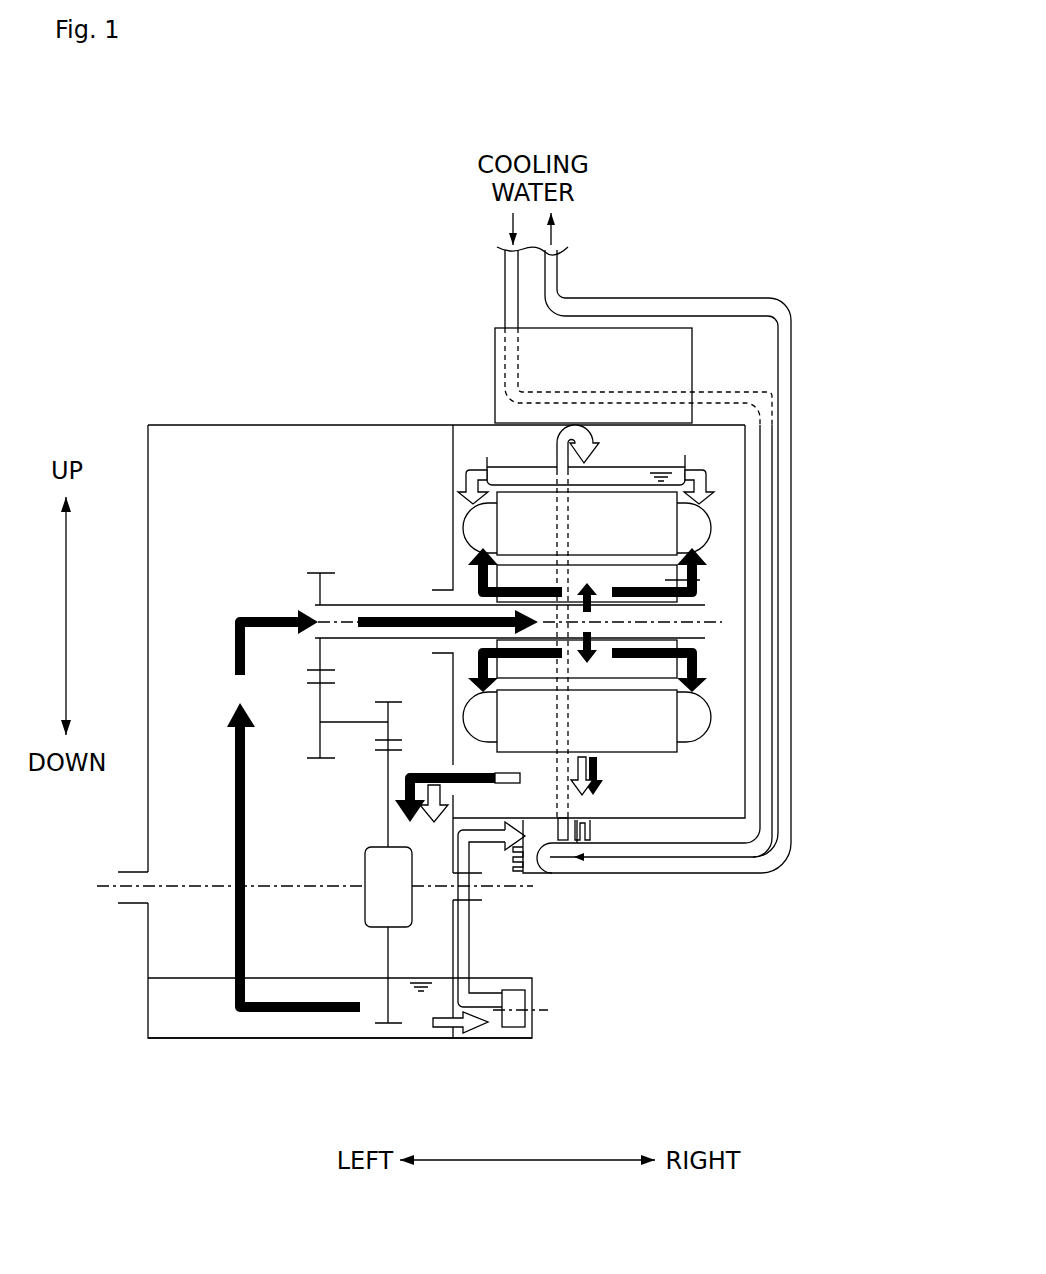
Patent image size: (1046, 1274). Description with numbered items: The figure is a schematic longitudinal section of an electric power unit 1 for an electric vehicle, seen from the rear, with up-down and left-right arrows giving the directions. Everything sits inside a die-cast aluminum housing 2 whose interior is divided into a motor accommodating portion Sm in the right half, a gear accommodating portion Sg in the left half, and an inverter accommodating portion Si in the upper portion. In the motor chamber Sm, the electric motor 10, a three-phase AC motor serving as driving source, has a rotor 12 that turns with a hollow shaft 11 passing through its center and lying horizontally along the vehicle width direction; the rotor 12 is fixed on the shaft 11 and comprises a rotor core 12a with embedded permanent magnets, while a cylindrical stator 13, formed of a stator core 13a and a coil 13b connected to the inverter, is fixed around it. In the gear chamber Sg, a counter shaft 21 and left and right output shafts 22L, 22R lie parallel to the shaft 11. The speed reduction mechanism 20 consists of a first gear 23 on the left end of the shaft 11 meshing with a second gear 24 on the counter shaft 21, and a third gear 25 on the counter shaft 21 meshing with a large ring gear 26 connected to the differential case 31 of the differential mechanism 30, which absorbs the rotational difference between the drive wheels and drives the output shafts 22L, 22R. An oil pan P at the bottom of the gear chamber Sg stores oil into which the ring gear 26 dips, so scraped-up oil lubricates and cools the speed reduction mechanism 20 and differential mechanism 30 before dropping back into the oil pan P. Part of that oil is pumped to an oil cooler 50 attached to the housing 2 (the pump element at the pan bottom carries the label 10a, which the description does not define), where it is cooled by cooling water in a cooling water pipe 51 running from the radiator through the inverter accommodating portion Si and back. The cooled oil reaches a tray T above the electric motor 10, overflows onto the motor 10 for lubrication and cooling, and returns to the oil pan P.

The electric power unit 1 is at (743, 270).
The housing 2 is at (666, 610).
The electric motor 10 is at (712, 502).
The electric oil pump 10a is at (527, 997).
The hollow shaft 11 is at (395, 605).
The rotor 12 is at (660, 557).
The rotor core 12a is at (700, 580).
The stator 13 is at (715, 515).
The stator core 13a is at (680, 535).
The coil 13b is at (708, 528).
The speed reduction mechanism 20 is at (353, 681).
The counter shaft 21 is at (347, 722).
The left output shaft 22L is at (200, 890).
The right output shaft 22R is at (503, 890).
The first gear 23 is at (320, 573).
The second gear 24 is at (325, 760).
The third gear 25 is at (400, 703).
The ring gear 26 is at (382, 1025).
The differential mechanism 30 is at (353, 910).
The differential case 31 is at (360, 908).
The oil cooler 50 is at (548, 875).
The cooling water pipe 51 is at (508, 275).
The tray T is at (686, 457).
The inverter accommodating portion Si is at (676, 340).
The gear accommodating portion Sg is at (167, 545).
The motor accommodating portion Sm is at (730, 748).
The oil pan P is at (146, 1012).